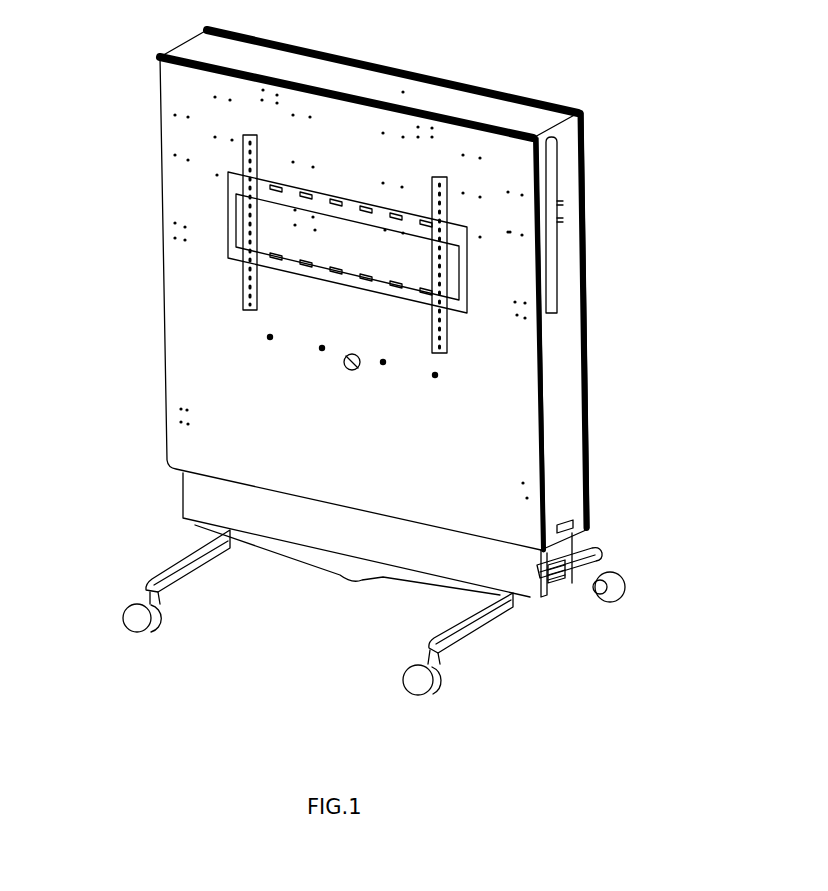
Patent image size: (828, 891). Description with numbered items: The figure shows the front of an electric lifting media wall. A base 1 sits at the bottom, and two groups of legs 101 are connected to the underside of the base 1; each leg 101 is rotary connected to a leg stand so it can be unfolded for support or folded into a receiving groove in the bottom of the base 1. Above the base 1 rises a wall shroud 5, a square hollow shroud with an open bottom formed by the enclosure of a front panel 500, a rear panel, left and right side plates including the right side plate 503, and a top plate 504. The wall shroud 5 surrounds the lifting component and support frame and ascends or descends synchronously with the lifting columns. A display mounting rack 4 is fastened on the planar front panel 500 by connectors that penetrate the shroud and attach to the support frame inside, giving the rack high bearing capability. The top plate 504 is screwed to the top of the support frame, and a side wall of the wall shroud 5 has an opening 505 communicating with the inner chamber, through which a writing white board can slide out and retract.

The front panel 500 is at (197, 102).
The top plate 504 is at (452, 100).
The opening 505 is at (557, 170).
The right side plate 503 is at (557, 352).
The wall shroud 5 is at (587, 388).
The display mounting rack 4 is at (315, 190).
The base 1 is at (570, 550).
The leg 101 is at (473, 623).